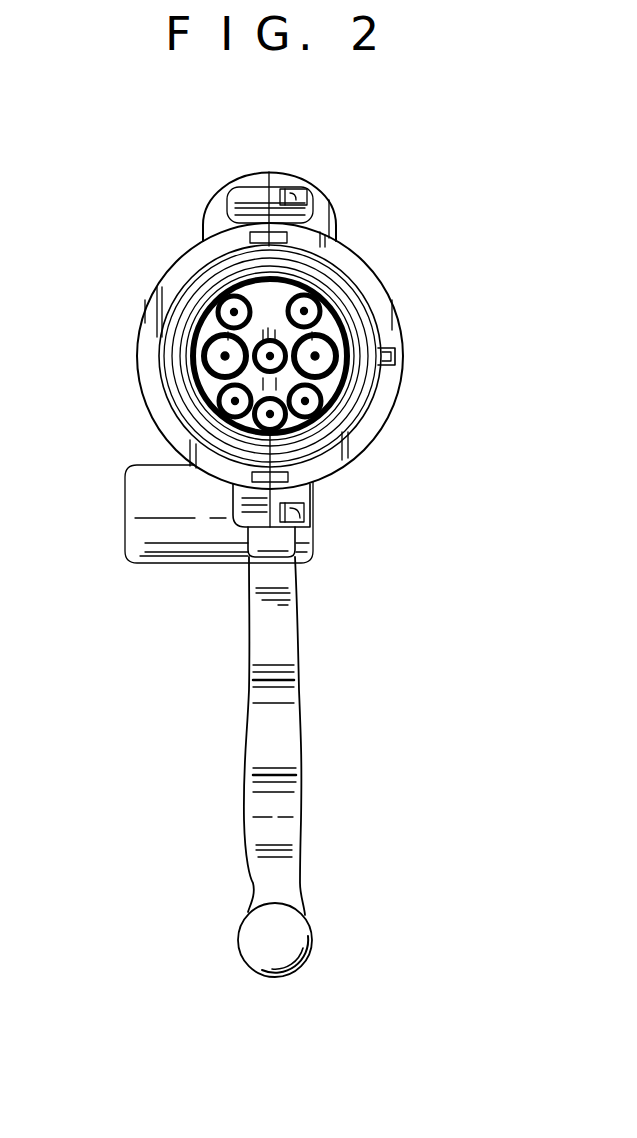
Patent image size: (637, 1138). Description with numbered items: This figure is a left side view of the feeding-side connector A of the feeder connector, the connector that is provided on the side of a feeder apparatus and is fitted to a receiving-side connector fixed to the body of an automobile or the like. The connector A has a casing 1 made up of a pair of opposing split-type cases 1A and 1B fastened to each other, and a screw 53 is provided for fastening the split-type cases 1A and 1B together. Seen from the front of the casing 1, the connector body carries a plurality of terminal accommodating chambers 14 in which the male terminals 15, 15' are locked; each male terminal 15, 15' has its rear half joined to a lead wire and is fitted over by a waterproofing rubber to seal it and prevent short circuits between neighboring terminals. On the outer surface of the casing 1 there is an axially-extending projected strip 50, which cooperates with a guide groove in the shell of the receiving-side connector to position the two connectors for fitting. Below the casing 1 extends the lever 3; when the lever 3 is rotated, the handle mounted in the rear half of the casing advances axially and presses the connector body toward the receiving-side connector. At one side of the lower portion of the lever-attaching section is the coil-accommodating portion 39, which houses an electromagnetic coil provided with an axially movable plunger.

The casing 1 is at (343, 238).
The split-type case 1A is at (195, 258).
The split-type case 1B is at (370, 285).
The terminal accommodating chamber 14 is at (197, 337).
The male terminal 15 is at (149, 367).
The male terminal 15' is at (149, 289).
The projected strip 50 is at (395, 355).
The screw 53 is at (306, 522).
The coil-accommodating portion 39 is at (155, 550).
The lever 3 is at (303, 748).
The feeding-side connector A is at (498, 268).